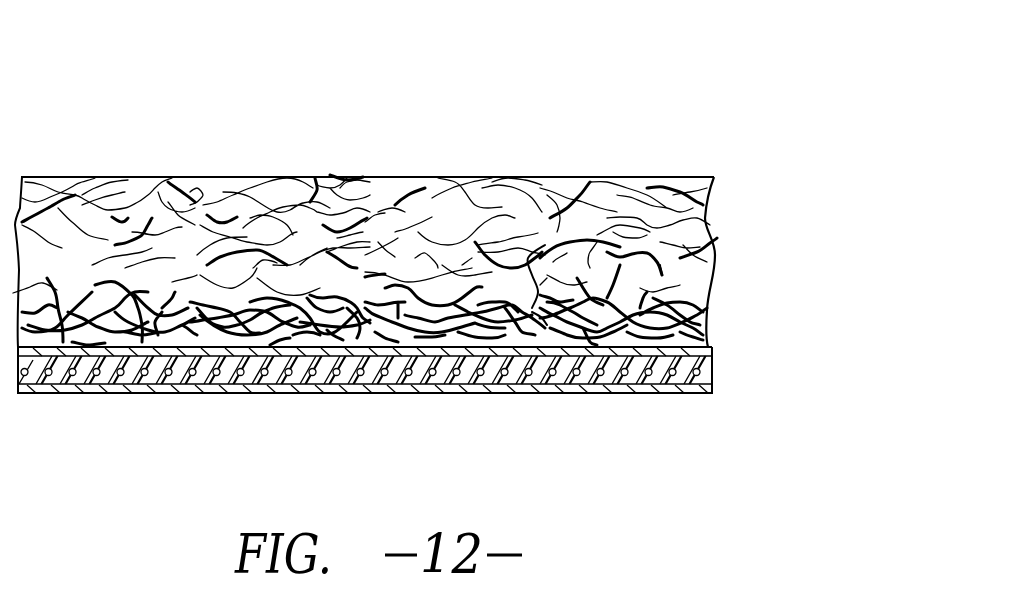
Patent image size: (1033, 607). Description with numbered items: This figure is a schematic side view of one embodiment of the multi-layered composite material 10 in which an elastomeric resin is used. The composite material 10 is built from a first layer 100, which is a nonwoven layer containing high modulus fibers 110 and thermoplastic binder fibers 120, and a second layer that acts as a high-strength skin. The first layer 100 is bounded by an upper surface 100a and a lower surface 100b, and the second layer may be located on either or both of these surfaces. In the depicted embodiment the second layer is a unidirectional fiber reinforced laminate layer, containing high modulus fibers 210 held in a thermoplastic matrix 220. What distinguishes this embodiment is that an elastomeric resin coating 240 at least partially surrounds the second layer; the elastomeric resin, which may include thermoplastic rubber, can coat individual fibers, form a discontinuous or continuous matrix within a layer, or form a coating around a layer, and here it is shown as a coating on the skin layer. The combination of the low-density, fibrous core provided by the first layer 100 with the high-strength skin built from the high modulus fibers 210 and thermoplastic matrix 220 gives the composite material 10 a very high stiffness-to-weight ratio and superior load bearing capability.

The multi-layered composite material 10 is at (570, 140).
The first layer 100 is at (743, 177).
The upper surface 100a is at (713, 357).
The lower surface 100b is at (713, 177).
The high modulus fibers 110 is at (133, 337).
The thermoplastic binder fibers 120 is at (315, 180).
The high modulus fibers 210 is at (362, 370).
The thermoplastic matrix 220 is at (582, 378).
The elastomeric resin coating 240 is at (463, 350).